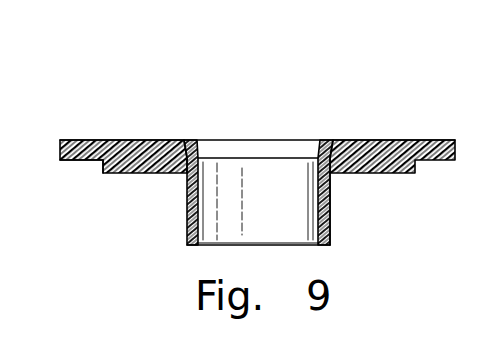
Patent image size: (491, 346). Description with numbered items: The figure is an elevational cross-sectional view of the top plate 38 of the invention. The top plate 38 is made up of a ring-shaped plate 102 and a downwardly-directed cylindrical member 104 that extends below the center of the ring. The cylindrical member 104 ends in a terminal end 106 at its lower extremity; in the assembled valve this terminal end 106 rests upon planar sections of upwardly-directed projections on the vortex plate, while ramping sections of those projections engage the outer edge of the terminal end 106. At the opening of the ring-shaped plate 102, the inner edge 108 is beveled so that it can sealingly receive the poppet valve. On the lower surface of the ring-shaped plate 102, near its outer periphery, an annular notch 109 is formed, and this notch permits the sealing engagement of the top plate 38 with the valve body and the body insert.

The top plate 38 is at (153, 125).
The ring-shaped plate 102 is at (364, 140).
The cylindrical member 104 is at (332, 217).
The terminal end 106 is at (197, 246).
The inner edge 108 is at (208, 142).
The annular notch 109 is at (83, 160).